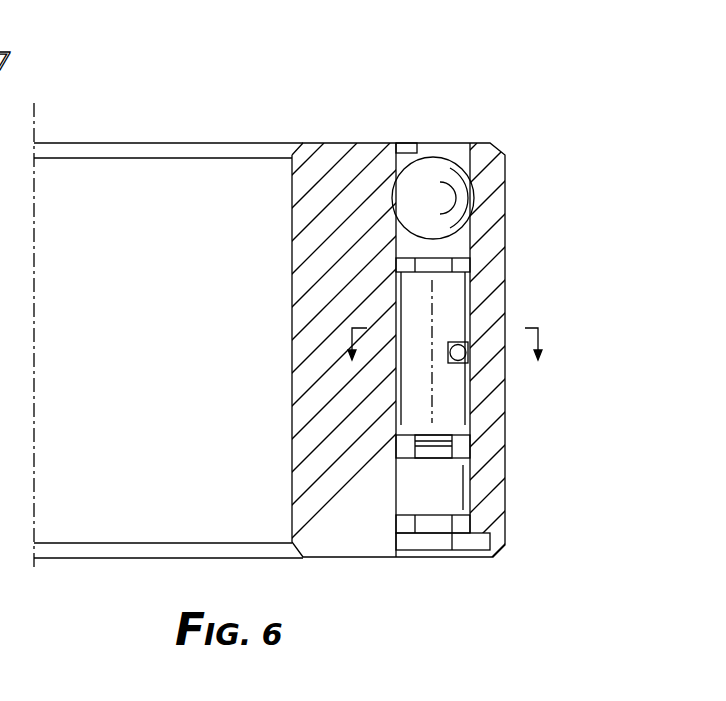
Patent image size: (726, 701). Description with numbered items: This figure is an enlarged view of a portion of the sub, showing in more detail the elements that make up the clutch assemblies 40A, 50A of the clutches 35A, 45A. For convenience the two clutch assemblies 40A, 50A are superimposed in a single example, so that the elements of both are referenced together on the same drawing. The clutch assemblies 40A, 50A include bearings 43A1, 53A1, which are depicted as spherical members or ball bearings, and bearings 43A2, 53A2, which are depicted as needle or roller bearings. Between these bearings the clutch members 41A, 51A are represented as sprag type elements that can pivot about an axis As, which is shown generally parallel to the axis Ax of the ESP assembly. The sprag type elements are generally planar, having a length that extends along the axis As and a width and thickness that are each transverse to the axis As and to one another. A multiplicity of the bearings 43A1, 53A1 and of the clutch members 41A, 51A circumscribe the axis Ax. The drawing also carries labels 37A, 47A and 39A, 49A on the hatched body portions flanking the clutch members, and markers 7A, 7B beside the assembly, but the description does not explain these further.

The axis of the ESP assembly Ax is at (35, 233).
The clutch 35A is at (363, 304).
The clutch 45A is at (514, 135).
The first wall portion 37A is at (343, 304).
The first wall portion 47A is at (312, 162).
The second wall portion 39A is at (394, 350).
The second wall portion 49A is at (495, 187).
The clutch assembly 40A is at (398, 306).
The clutch assembly 50A is at (398, 306).
The bearing 43A1 is at (391, 134).
The bearing 53A1 is at (430, 165).
The clutch member 41A is at (367, 345).
The clutch member 51A is at (367, 345).
The axis As is at (444, 302).
The bearing 43A2 is at (506, 508).
The bearing 53A2 is at (448, 492).
The section line 7A is at (450, 362).
The section line 7B is at (450, 362).